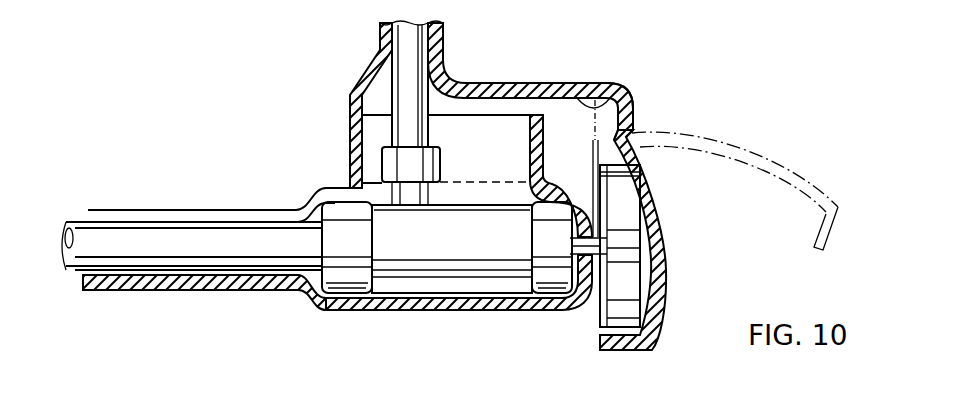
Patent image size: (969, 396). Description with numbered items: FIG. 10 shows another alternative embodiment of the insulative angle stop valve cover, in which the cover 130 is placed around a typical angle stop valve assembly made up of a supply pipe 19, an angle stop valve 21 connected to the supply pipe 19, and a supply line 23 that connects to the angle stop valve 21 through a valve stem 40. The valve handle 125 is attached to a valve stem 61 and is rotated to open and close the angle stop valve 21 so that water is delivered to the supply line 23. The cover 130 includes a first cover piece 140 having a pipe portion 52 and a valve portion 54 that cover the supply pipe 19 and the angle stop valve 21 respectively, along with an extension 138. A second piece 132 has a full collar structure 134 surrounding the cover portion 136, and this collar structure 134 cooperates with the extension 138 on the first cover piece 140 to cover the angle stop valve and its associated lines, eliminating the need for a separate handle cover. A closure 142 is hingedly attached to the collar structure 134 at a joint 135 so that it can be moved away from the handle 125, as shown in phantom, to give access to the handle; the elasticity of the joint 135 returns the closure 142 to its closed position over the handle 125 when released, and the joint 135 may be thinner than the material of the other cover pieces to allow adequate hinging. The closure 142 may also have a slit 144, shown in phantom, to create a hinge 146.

The supply pipe 19 is at (121, 232).
The angle stop valve 21 is at (460, 258).
The supply line 23 is at (402, 47).
The valve stem 40 is at (407, 200).
The pipe portion 52 is at (119, 291).
The valve portion 54 is at (408, 306).
The valve stem 61 is at (603, 243).
The valve handle 125 is at (632, 215).
The cover 130 is at (674, 58).
The second piece 132 is at (446, 58).
The full collar structure 134 is at (633, 86).
The joint 135 is at (632, 136).
The cover portion 136 is at (482, 83).
The extension 138 is at (358, 143).
The first cover piece 140 is at (252, 292).
The closure 142 is at (750, 158).
The slit 144 is at (575, 99).
The hinge 146 is at (634, 101).